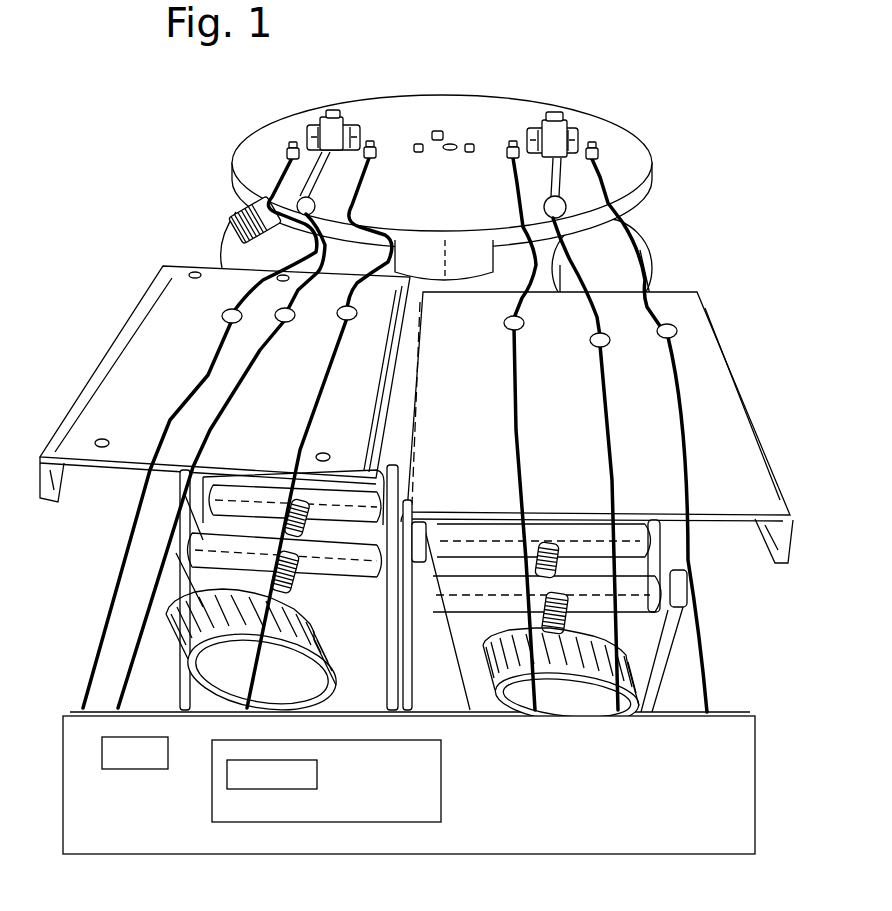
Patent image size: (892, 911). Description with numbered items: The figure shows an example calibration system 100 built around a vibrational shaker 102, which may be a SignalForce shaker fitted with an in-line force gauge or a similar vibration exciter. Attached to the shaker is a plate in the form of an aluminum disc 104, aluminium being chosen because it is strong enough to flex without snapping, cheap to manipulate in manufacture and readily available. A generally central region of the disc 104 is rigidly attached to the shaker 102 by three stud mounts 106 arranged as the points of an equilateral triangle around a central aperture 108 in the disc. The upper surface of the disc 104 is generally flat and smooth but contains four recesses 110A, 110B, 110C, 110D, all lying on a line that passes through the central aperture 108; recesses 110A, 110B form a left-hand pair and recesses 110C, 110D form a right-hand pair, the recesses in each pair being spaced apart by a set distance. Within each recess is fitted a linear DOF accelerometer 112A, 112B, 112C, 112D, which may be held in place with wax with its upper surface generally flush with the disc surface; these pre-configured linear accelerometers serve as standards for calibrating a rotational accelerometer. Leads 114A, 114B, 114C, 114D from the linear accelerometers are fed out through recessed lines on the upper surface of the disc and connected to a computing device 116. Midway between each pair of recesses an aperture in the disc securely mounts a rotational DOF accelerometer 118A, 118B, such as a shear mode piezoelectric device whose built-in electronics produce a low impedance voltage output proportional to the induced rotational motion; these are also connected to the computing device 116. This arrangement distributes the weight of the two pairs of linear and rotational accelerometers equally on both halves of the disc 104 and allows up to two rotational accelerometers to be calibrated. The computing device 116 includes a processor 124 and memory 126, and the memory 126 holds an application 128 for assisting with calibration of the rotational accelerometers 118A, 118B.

The calibration system 100 is at (122, 255).
The vibrational shaker 102 is at (600, 253).
The aluminum disc 104 is at (620, 140).
The stud mounts 106 is at (435, 131).
The central aperture 108 is at (452, 145).
The recess 110A is at (287, 153).
The recess 110B is at (368, 147).
The recess 110C is at (517, 148).
The recess 110D is at (598, 153).
The linear DOF accelerometer 112A is at (293, 145).
The linear DOF accelerometer 112B is at (374, 145).
The linear DOF accelerometer 112C is at (512, 142).
The linear DOF accelerometer 112D is at (594, 143).
The lead 114A is at (265, 193).
The lead 114B is at (352, 208).
The lead 114C is at (517, 203).
The lead 114D is at (620, 185).
The computing device 116 is at (735, 780).
The rotational DOF accelerometer 118A is at (320, 130).
The rotational DOF accelerometer 118B is at (567, 130).
The processor 124 is at (113, 750).
The memory 126 is at (443, 788).
The application 128 is at (248, 780).